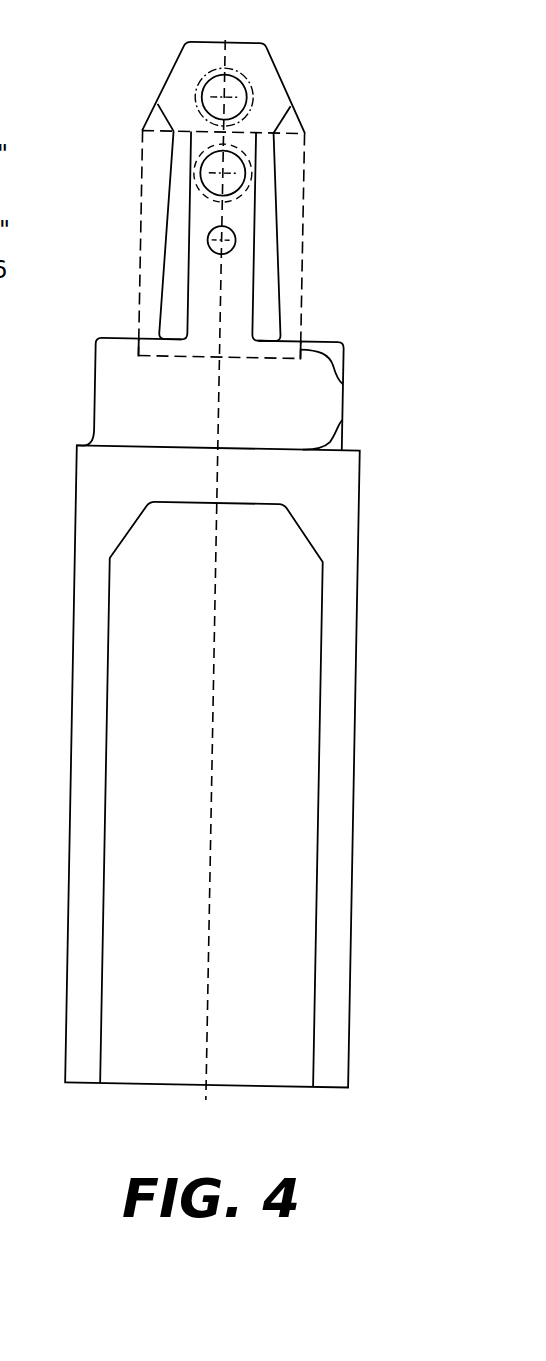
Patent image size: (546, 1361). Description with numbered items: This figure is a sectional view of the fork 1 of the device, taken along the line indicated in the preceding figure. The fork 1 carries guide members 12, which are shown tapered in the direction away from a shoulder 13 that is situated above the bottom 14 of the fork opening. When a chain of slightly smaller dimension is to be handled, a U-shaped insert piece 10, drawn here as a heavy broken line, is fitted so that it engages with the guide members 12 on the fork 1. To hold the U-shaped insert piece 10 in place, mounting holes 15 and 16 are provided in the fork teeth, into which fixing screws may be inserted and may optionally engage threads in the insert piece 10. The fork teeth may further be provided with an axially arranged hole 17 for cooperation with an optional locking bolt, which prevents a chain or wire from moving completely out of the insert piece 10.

The fork 1 is at (0, 99).
The U-shaped insert piece 10 is at (343, 382).
The guide members 12 is at (262, 238).
The shoulder 13 is at (313, 330).
The bottom of the fork opening 14 is at (344, 418).
The mounting hole 15 is at (124, 284).
The mounting hole 16 is at (207, 242).
The axially arranged hole 17 is at (228, 173).